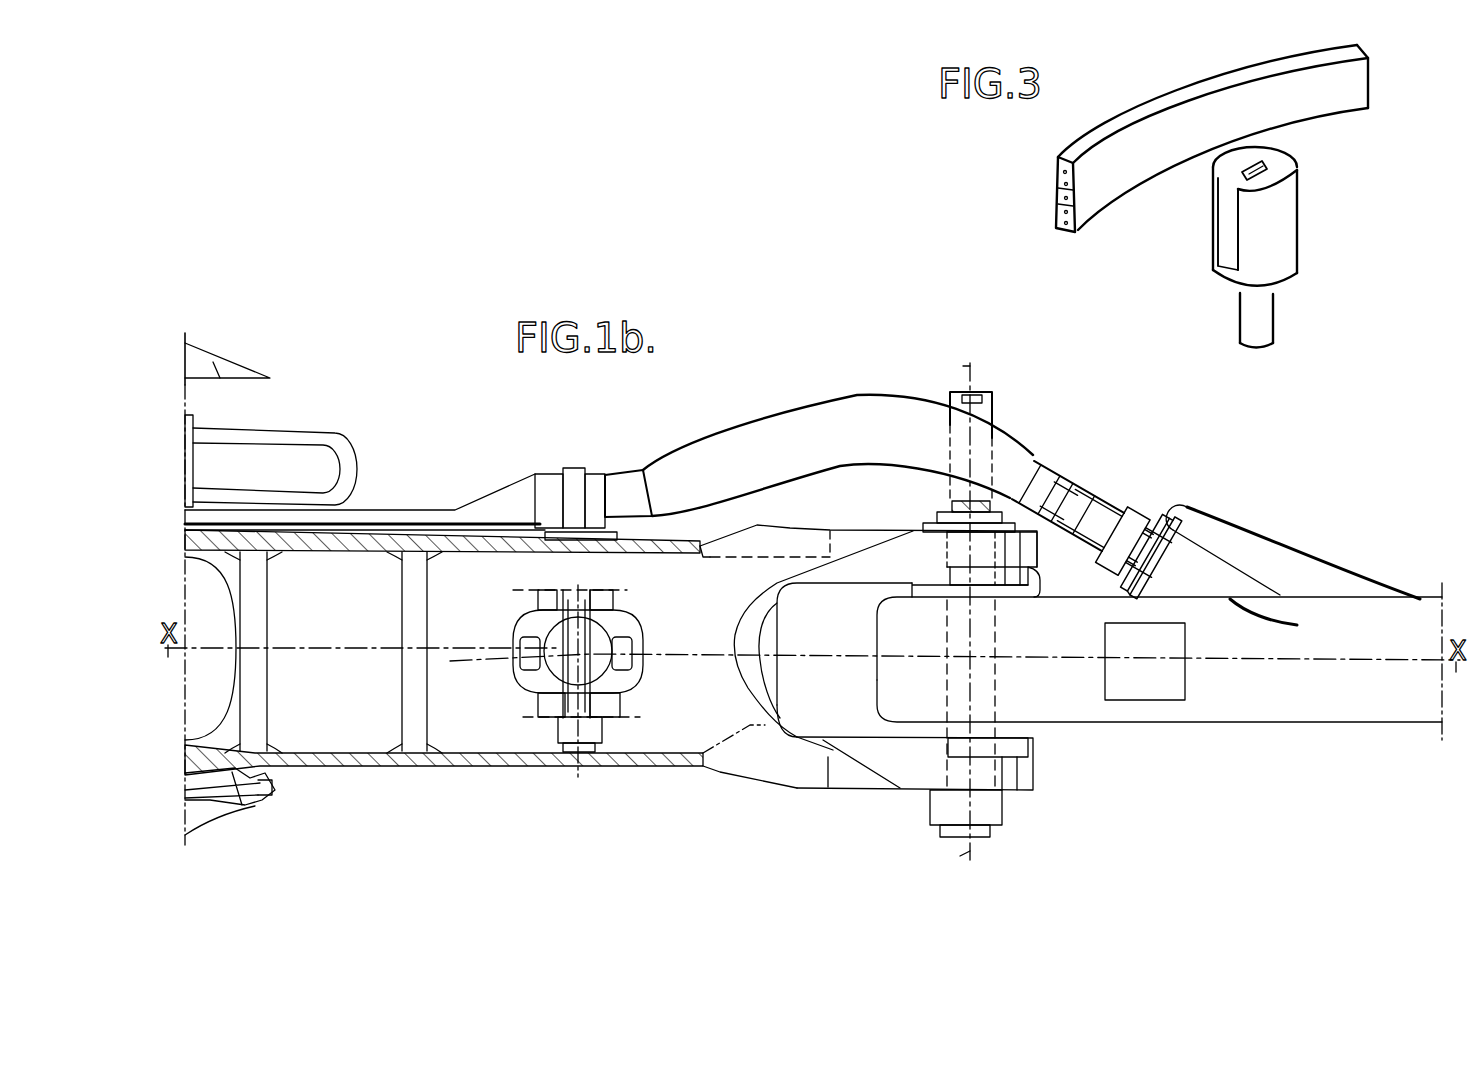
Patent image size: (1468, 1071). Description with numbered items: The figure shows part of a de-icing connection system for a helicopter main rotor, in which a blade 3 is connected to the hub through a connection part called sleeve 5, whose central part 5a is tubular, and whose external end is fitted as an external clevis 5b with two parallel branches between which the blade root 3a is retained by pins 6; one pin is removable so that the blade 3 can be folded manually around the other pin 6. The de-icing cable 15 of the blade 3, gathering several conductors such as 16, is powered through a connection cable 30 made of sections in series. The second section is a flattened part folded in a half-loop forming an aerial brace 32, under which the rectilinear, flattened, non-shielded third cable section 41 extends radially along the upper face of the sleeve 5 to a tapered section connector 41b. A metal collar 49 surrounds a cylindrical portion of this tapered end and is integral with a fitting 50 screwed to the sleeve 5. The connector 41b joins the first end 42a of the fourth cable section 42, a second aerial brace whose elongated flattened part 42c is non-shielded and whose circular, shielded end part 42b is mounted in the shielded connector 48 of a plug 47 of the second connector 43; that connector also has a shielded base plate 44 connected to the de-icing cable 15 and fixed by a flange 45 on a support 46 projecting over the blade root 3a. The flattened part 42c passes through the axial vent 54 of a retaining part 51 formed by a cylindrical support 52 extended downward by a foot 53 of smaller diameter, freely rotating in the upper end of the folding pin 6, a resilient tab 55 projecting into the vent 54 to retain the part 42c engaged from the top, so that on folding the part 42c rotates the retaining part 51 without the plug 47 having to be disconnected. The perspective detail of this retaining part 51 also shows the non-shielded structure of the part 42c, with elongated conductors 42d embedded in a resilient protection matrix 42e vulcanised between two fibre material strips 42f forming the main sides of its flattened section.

In FIG. 1b, the blade 3 is at (1088, 659).
In FIG. 1b, the blade root 3a is at (897, 637).
In FIG. 1b, the sleeve 5 is at (491, 654).
In FIG. 1b, the central part 5a is at (401, 768).
In FIG. 1b, the external clevis 5b is at (893, 572).
In FIG. 1b, the pin 6 is at (960, 673).
In FIG. 1b, the de-icing cable 15 is at (1204, 567).
In FIG. 1b, the conductor 16 is at (1253, 607).
In FIG. 1b, the connection cable 30 is at (813, 591).
In FIG. 1b, the second section 32 is at (323, 438).
In FIG. 1b, the third cable section 41 is at (417, 520).
In FIG. 1b, the tapered section connector 41b is at (518, 497).
In FIG. 1b, the fourth cable section 42 is at (925, 456).
In FIG. 1b, the first end 42a is at (625, 490).
In FIG. 1b, the second end 42b is at (1124, 511).
In FIG. 3, the elongated part 42c is at (1168, 100).
In FIG. 1b, the elongated part 42c is at (840, 428).
In FIG. 3, the elongated conductors 42d is at (1057, 199).
In FIG. 3, the resilient protection matrix 42e is at (1053, 188).
In FIG. 3, the fibre material strips 42f is at (1057, 175).
In FIG. 1b, the second connector 43 is at (1154, 508).
In FIG. 1b, the base plate 44 is at (1153, 557).
In FIG. 1b, the flange 45 is at (1145, 552).
In FIG. 1b, the support 46 is at (1310, 549).
In FIG. 1b, the plug 47 is at (1136, 548).
In FIG. 1b, the shielded connector 48 is at (1089, 518).
In FIG. 1b, the metal collar 49 is at (575, 478).
In FIG. 1b, the fitting 50 is at (605, 541).
In FIG. 3, the retaining part 51 is at (1278, 241).
In FIG. 1b, the retaining part 51 is at (981, 586).
In FIG. 3, the cylindrical support 52 is at (1260, 220).
In FIG. 1b, the cylindrical support 52 is at (950, 493).
In FIG. 3, the foot 53 is at (1258, 322).
In FIG. 3, the axial vent 54 is at (1228, 222).
In FIG. 3, the resilient tab 55 is at (1266, 164).
In FIG. 1b, the resilient tab 55 is at (973, 399).